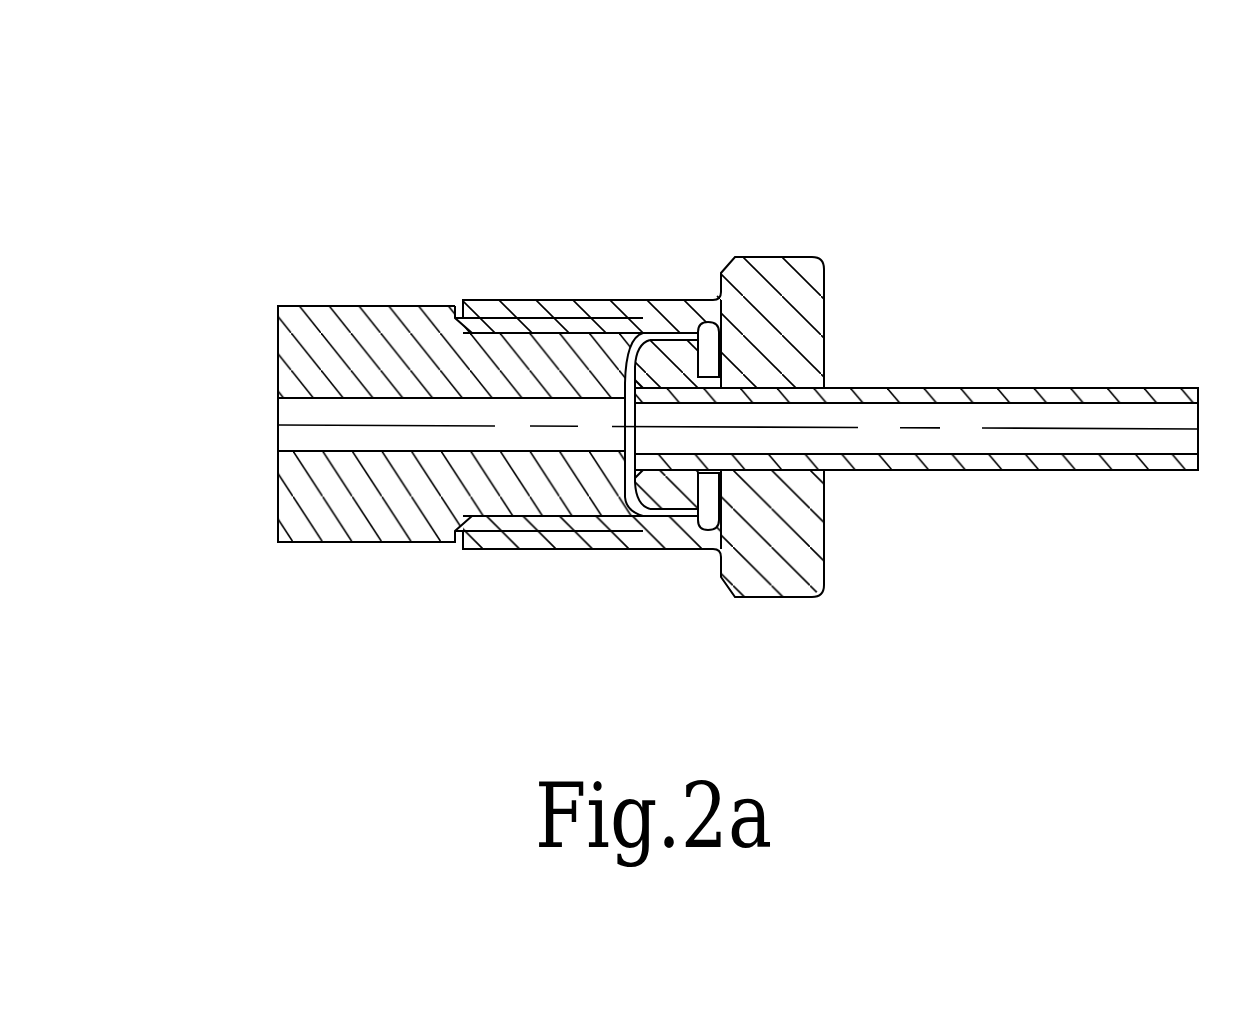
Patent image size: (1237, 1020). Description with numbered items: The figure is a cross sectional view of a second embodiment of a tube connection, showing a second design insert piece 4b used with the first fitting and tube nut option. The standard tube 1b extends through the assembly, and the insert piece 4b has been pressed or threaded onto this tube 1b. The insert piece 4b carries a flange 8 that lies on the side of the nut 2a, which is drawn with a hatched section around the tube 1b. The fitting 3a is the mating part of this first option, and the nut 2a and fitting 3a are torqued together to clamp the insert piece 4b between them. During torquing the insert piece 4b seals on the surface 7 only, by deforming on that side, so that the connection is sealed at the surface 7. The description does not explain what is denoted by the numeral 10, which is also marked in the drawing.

The standard tube 1b is at (754, 509).
The nut 2a is at (771, 401).
The fitting 3a is at (352, 305).
The insert piece 4b is at (647, 521).
The sealing surface 7 is at (632, 348).
The flange 8 is at (705, 371).
The annular shoulder 10 is at (697, 487).